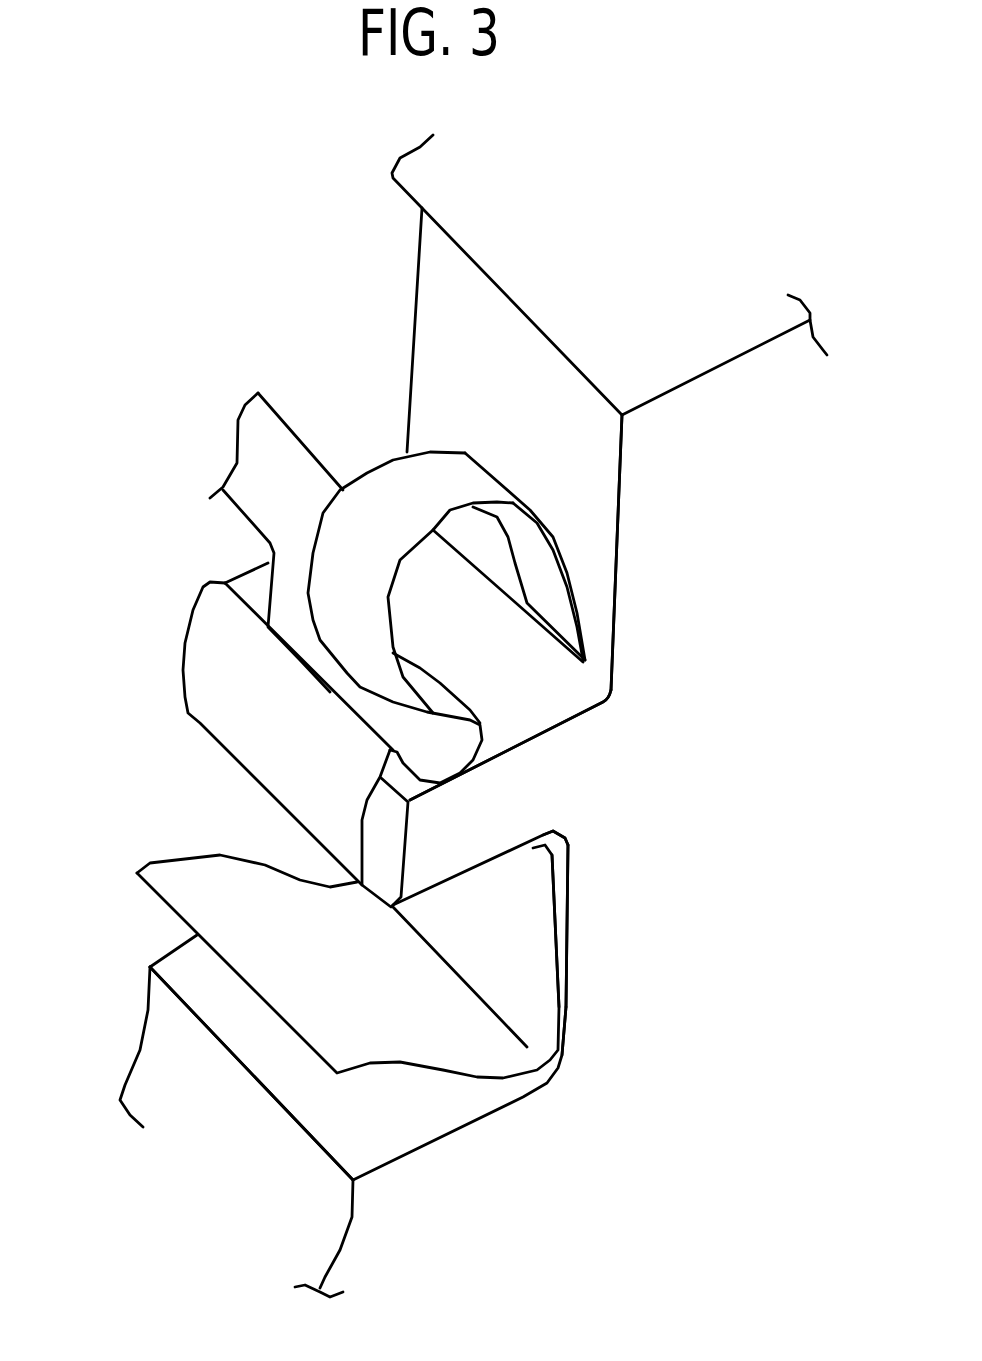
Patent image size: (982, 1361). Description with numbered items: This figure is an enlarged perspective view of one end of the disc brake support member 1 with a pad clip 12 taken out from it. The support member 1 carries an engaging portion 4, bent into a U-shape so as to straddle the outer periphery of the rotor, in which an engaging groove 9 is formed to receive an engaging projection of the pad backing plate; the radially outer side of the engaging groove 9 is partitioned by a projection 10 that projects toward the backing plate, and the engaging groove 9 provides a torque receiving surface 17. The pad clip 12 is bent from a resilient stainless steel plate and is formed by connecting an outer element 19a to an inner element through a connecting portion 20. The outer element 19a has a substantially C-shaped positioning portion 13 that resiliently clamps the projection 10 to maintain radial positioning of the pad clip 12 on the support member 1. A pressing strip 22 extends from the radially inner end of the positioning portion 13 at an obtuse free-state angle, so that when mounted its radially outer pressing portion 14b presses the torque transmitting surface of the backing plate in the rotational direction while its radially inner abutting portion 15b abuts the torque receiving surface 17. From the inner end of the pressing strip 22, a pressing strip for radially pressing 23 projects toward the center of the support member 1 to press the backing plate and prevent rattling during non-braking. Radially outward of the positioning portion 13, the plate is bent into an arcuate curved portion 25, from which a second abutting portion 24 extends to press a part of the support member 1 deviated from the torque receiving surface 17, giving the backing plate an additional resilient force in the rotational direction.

The support member 1 is at (663, 459).
The engaging portion 4 is at (663, 780).
The engaging groove 9 is at (562, 867).
The projection 10 is at (503, 800).
The pad clip 12 is at (301, 296).
The positioning portion 13 is at (230, 673).
The pressing portion 14b is at (517, 923).
The abutting portion 15b is at (533, 1020).
The torque receiving surface 17 is at (550, 977).
The outer element 19a is at (268, 750).
The connecting portion 20 is at (270, 457).
The pressing strip 22 is at (490, 957).
The pressing strip for radially pressing 23 is at (317, 990).
The second abutting portion 24 is at (550, 592).
The curved portion 25 is at (352, 530).